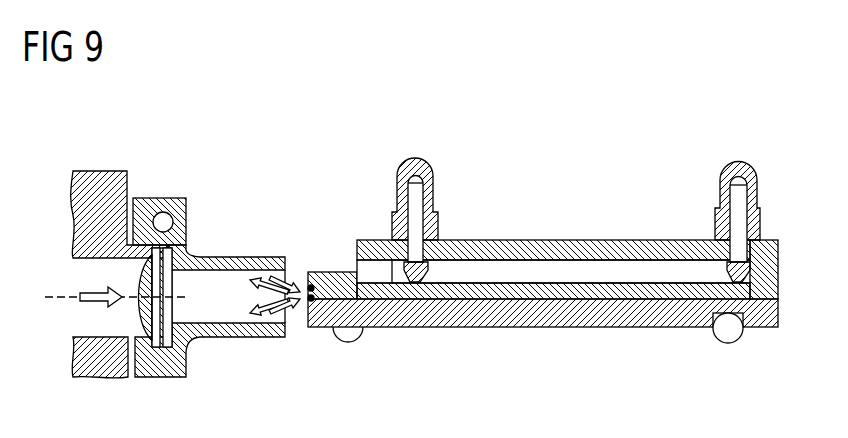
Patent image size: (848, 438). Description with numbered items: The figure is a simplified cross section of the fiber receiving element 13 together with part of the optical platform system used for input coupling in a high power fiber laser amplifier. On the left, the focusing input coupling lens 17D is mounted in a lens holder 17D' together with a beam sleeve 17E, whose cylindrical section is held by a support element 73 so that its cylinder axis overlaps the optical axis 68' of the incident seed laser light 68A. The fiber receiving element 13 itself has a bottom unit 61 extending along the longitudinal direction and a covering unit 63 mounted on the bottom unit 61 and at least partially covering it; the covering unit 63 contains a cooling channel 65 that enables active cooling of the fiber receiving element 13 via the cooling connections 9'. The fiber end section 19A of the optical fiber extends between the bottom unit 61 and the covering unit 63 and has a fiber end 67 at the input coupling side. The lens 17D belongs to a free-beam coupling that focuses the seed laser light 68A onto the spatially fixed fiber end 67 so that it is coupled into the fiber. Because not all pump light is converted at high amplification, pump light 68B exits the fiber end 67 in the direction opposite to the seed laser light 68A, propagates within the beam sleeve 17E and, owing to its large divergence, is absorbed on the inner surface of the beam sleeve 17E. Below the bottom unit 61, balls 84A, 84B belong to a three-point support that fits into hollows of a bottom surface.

The fiber receiving element 13 is at (560, 168).
The cooling connections 9' is at (556, 212).
The lens holder 17D' is at (119, 184).
The focusing input coupling lens 17D is at (103, 371).
The beam sleeve 17E is at (233, 257).
The support element 73 is at (148, 198).
The optical axis 68' is at (104, 273).
The seed laser light 68A is at (133, 278).
The pump light 68B is at (293, 287).
The fiber end 67 is at (305, 302).
The cooling channel 65 is at (493, 275).
The covering unit 63 is at (628, 243).
The fiber end section 19A is at (520, 292).
The bottom unit 61 is at (626, 318).
The ball 84A is at (728, 340).
The ball 84B is at (348, 336).